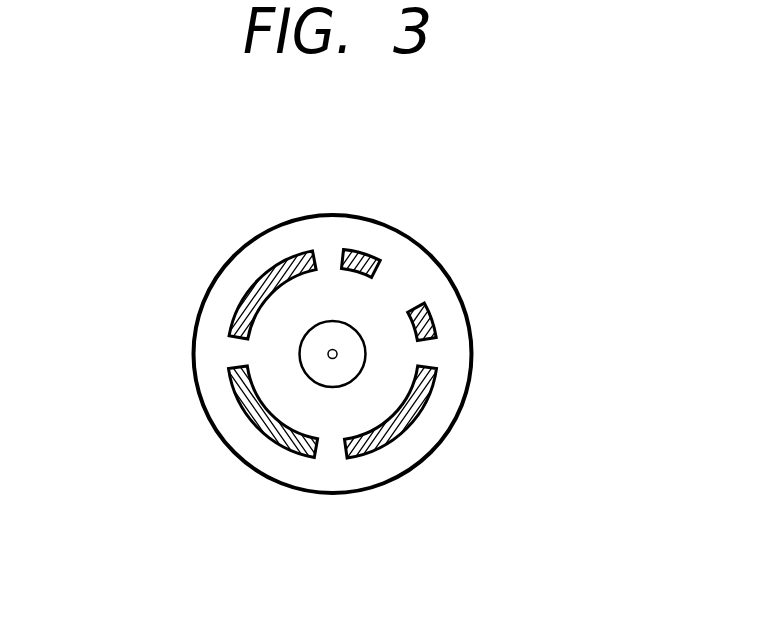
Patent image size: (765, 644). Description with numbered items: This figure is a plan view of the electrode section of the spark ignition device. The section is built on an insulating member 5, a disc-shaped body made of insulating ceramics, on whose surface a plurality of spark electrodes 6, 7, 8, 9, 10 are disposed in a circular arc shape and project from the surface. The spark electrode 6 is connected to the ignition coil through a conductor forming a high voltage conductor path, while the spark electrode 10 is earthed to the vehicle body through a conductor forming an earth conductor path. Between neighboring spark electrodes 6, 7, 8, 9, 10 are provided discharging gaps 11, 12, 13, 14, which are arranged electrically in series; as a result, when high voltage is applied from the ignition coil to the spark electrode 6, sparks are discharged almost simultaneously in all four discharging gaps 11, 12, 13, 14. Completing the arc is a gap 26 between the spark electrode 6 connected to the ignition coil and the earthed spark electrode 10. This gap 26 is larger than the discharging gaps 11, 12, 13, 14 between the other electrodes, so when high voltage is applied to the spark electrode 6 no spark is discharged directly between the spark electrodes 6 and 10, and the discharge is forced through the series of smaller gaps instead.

The insulating member 5 is at (228, 288).
The spark electrode 6 is at (363, 254).
The spark electrode 7 is at (276, 263).
The spark electrode 8 is at (265, 430).
The spark electrode 9 is at (398, 433).
The spark electrode 10 is at (435, 322).
The discharging gap 11 is at (326, 256).
The discharging gap 12 is at (235, 355).
The discharging gap 13 is at (332, 447).
The discharging gap 14 is at (432, 348).
The gap 26 is at (403, 283).